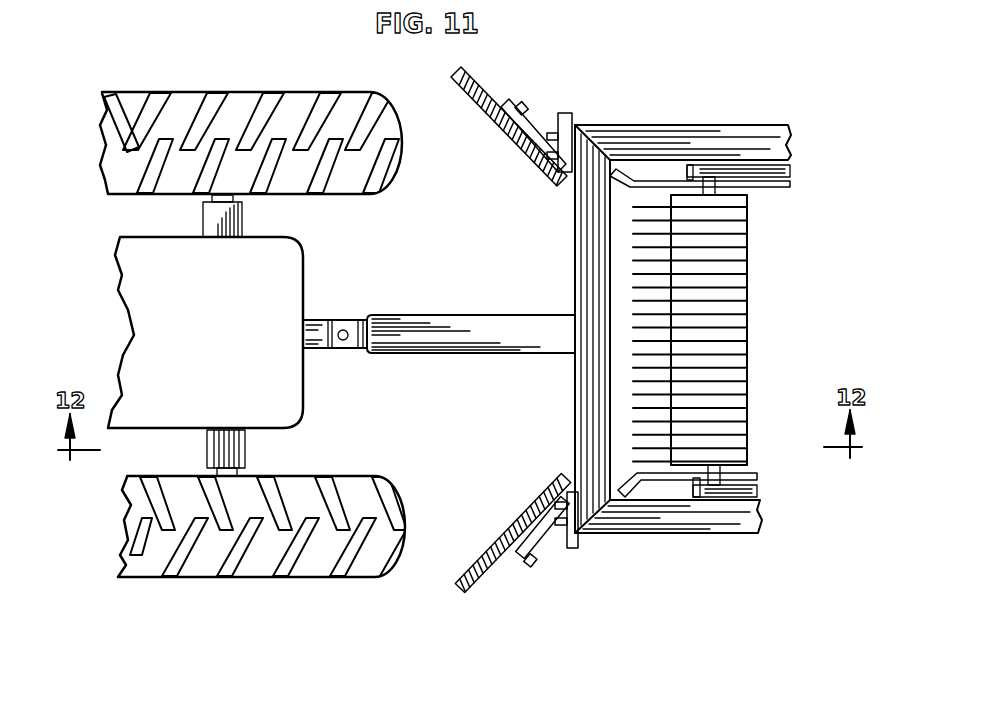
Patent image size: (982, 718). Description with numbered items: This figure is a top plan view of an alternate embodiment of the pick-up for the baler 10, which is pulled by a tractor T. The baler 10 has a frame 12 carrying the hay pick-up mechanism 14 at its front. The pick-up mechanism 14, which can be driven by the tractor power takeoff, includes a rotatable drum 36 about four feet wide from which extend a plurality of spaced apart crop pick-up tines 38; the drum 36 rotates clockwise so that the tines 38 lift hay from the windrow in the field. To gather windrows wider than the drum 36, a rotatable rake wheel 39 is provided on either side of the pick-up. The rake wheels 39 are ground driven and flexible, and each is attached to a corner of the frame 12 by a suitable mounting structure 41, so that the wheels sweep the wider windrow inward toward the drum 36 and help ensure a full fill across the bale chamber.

The baler 10 is at (762, 92).
The frame 12 is at (634, 125).
The hay pick-up mechanism 14 is at (760, 302).
The rotatable drum 36 is at (750, 376).
The crop pick-up tines 38 is at (600, 272).
The rake wheel 39 is at (480, 91).
The mounting structure 41 is at (540, 128).
The tractor T is at (322, 275).